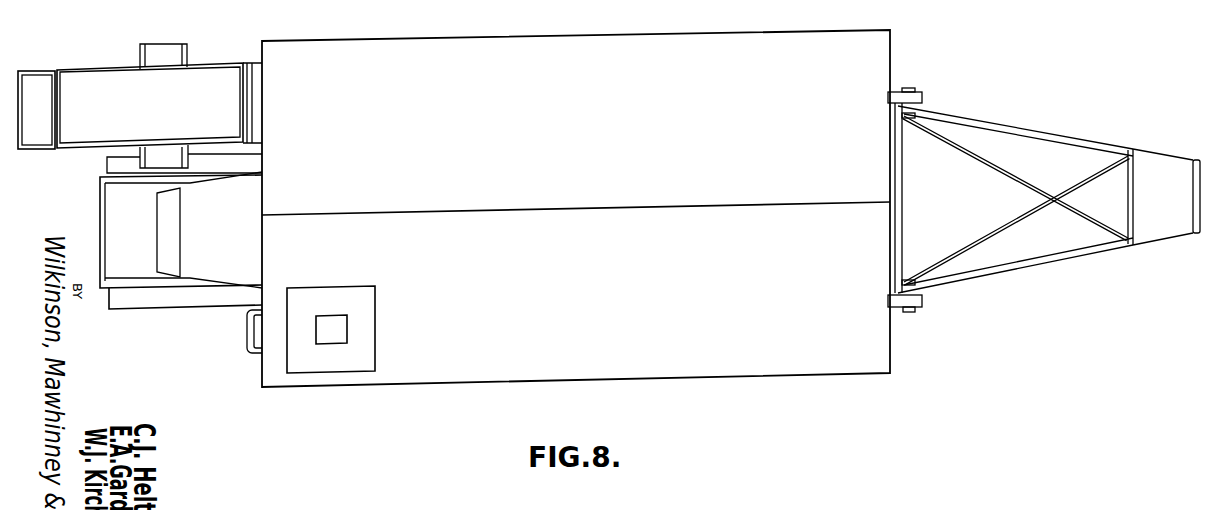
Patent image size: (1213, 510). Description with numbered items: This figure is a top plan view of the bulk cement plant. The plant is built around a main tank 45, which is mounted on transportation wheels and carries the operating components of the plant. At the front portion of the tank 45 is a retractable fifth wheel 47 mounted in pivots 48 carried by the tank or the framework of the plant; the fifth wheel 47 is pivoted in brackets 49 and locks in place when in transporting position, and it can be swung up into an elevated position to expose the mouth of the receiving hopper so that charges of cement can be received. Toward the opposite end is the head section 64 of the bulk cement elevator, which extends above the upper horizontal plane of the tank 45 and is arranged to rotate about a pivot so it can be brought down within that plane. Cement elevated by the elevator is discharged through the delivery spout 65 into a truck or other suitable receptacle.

The main tank 45 is at (566, 46).
The retractable fifth wheel 47 is at (1087, 253).
The pivots 48 is at (916, 79).
The brackets 49 is at (909, 99).
The head section 64 is at (110, 55).
The delivery spout 65 is at (40, 82).